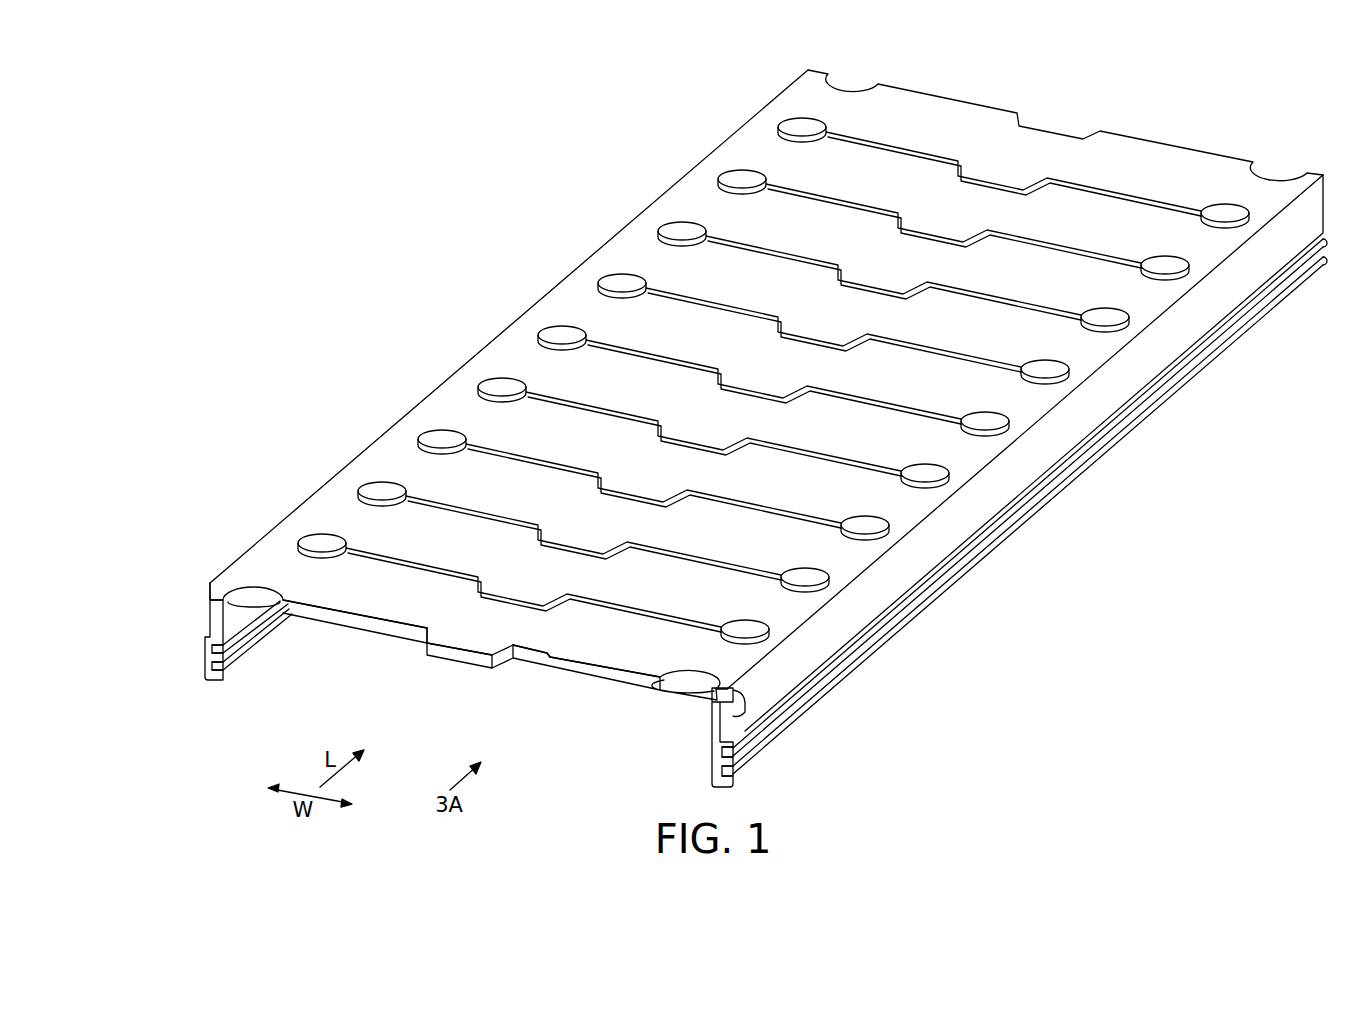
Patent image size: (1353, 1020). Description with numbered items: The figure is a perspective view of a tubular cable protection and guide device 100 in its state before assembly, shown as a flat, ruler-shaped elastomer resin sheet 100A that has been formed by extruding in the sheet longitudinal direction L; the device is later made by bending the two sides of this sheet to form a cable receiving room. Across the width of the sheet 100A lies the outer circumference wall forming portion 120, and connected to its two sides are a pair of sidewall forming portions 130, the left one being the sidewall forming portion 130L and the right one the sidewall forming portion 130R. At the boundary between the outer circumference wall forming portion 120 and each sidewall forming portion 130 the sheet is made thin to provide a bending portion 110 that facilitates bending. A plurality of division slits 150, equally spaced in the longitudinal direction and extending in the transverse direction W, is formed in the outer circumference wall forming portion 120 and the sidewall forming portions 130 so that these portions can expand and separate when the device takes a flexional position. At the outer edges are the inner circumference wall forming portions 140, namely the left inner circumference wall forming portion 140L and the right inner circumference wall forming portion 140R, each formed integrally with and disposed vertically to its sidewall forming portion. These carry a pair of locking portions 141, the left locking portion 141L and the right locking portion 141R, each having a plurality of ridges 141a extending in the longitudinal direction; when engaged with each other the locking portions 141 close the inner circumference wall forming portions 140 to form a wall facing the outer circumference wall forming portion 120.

The tubular cable protection and guide device 100 is at (390, 105).
The elastomer resin sheet 100A is at (701, 157).
The bending portion 110 is at (403, 628).
The outer circumference wall forming portion 120 is at (537, 632).
The sidewall forming portion 130 is at (498, 620).
The left sidewall forming portion 130L is at (399, 618).
The right sidewall forming portion 130R is at (557, 637).
The inner circumference wall forming portion 140 is at (497, 685).
The left inner circumference wall forming portion 140L is at (200, 583).
The right inner circumference wall forming portion 140R is at (745, 714).
The locking portion 141 is at (769, 507).
The left locking portion 141L is at (322, 665).
The right locking portion 141R is at (985, 642).
The ridge 141a is at (233, 650).
The division slit 150 is at (545, 460).